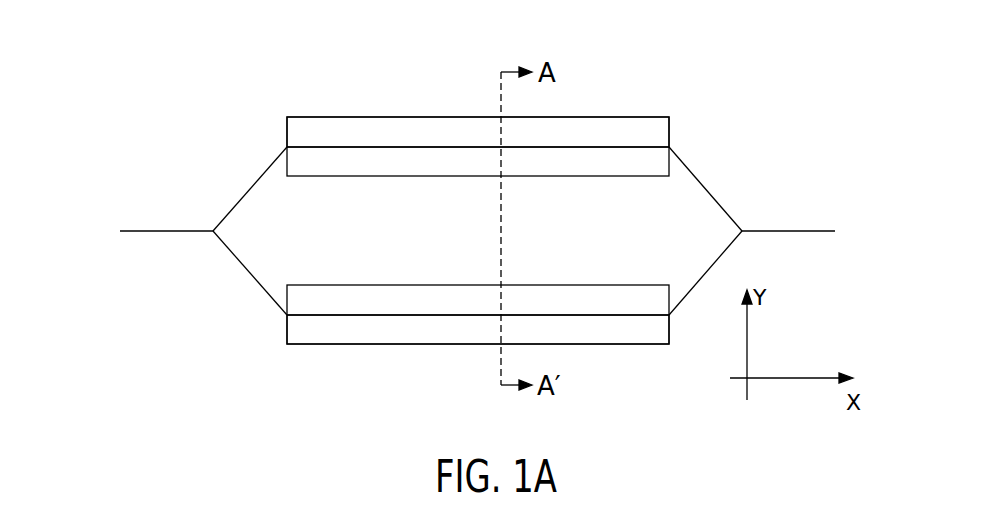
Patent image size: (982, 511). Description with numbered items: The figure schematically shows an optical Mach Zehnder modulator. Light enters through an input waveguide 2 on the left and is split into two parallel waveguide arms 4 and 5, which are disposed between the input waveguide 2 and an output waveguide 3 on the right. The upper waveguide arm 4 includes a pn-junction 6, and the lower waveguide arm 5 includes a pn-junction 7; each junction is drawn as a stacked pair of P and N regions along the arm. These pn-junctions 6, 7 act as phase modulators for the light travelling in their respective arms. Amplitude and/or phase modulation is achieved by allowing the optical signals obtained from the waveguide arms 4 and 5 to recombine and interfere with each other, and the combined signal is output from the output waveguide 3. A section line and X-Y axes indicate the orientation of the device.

The input waveguide 2 is at (152, 229).
The output waveguide 3 is at (773, 229).
The waveguide arm 4 is at (357, 146).
The waveguide arm 5 is at (370, 316).
The pn-junction 6 is at (401, 117).
The pn-junction 7 is at (442, 347).